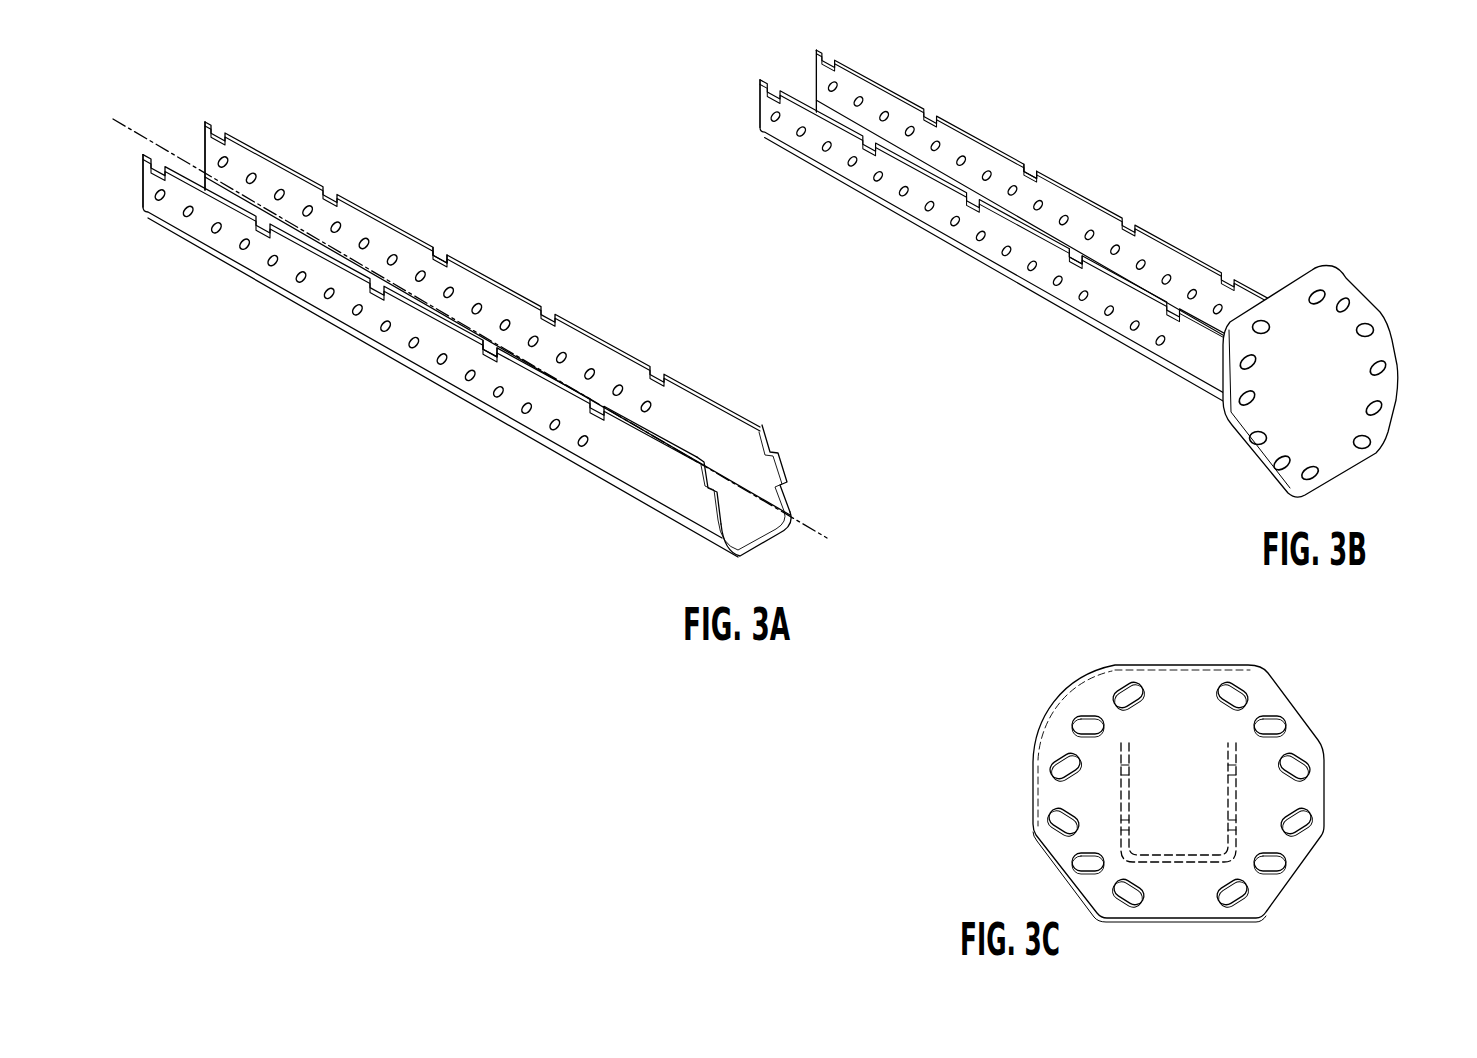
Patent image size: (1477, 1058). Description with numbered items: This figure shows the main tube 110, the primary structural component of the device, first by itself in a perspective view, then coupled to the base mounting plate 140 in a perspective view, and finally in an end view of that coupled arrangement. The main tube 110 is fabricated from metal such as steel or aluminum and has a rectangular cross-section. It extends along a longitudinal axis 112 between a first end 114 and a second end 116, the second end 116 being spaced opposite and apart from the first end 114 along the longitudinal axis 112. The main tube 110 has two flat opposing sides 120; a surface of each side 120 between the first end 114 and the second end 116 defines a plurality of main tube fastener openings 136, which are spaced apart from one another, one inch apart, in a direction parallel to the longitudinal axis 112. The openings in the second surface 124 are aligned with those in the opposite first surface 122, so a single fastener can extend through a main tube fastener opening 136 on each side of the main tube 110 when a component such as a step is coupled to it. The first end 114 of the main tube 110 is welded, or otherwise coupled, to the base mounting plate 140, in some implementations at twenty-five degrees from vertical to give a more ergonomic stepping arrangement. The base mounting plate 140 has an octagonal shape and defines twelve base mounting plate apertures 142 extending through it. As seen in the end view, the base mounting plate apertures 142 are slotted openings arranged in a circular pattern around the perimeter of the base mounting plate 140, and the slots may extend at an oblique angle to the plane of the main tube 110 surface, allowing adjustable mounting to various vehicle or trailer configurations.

In FIG. 3A, the main tube 110 is at (444, 357).
In FIG. 3B, the main tube 110 is at (1033, 249).
In FIG. 3A, the longitudinal axis 112 is at (153, 141).
In FIG. 3A, the first end 114 is at (692, 548).
In FIG. 3B, the first end 114 is at (1196, 404).
In FIG. 3C, the first end 114 is at (1119, 802).
In FIG. 3A, the second end 116 is at (141, 224).
In FIG. 3B, the second end 116 is at (755, 155).
In FIG. 3A, the flat opposing sides 120 is at (517, 352).
In FIG. 3B, the flat opposing sides 120 is at (1068, 247).
In FIG. 3A, the first surface 122 is at (607, 460).
In FIG. 3B, the first surface 122 is at (1135, 341).
In FIG. 3A, the second surface 124 is at (698, 390).
In FIG. 3B, the second surface 124 is at (1206, 270).
In FIG. 3A, the main tube fastener openings 136 is at (410, 348).
In FIG. 3B, the main tube fastener openings 136 is at (1057, 281).
In FIG. 3B, the base mounting plate 140 is at (1347, 375).
In FIG. 3C, the base mounting plate 140 is at (1193, 793).
In FIG. 3B, the base mounting plate apertures 142 is at (1368, 441).
In FIG. 3C, the base mounting plate apertures 142 is at (1250, 897).